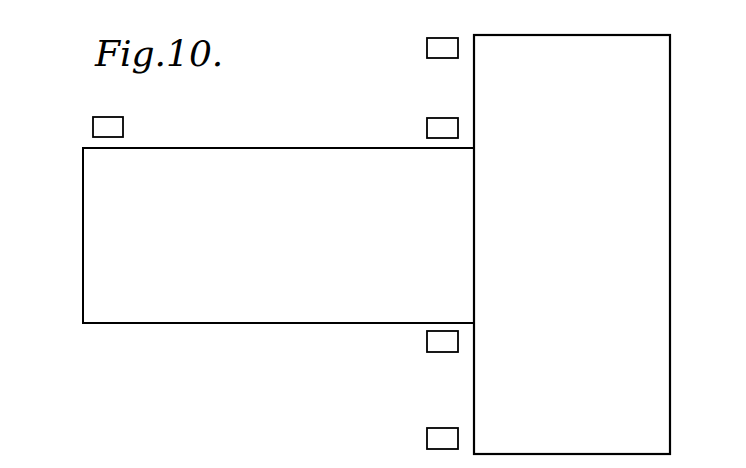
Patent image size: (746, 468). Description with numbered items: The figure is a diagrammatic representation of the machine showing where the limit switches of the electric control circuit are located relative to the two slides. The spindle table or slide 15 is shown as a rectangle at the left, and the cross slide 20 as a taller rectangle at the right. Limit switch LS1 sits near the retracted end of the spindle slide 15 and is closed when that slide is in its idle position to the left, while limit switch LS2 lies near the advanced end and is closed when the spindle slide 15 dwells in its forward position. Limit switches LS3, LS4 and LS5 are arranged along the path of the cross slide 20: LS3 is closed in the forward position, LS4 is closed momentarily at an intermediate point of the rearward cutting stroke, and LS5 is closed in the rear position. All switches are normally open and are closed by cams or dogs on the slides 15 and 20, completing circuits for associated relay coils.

The spindle slide 15 is at (207, 313).
The cross slide 20 is at (660, 313).
The limit switch LS1 is at (120, 126).
The limit switch LS2 is at (432, 127).
The limit switch LS3 is at (437, 437).
The limit switch LS4 is at (433, 340).
The limit switch LS5 is at (430, 52).